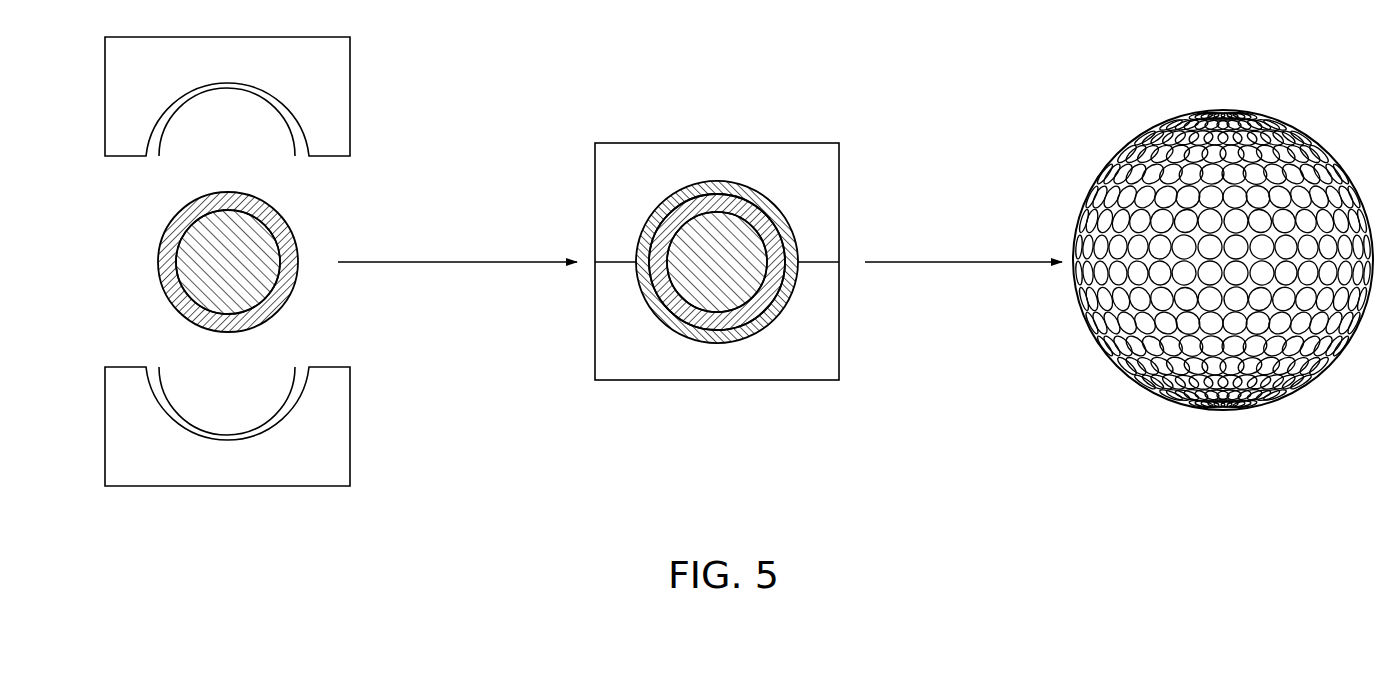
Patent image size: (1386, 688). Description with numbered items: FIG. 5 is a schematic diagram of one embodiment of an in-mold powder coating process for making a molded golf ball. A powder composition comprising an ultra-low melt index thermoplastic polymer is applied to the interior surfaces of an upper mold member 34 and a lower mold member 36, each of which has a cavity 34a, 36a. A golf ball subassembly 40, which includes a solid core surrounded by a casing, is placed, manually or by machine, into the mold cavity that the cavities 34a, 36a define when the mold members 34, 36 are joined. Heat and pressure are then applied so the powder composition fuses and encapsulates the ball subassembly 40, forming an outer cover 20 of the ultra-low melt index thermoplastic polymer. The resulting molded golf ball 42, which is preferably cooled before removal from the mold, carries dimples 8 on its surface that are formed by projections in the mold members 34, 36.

The dimples 8 is at (1178, 152).
The outer cover 20 is at (713, 343).
The upper mold member 34 is at (336, 101).
The cavity of upper mold member 34a is at (265, 129).
The lower mold member 36 is at (336, 464).
The cavity of lower mold member 36a is at (247, 392).
The golf ball subassembly 40 is at (183, 262).
The molded golf ball 42 is at (1009, 239).